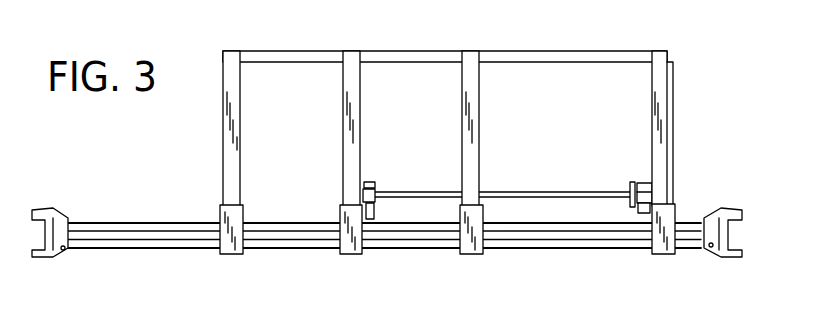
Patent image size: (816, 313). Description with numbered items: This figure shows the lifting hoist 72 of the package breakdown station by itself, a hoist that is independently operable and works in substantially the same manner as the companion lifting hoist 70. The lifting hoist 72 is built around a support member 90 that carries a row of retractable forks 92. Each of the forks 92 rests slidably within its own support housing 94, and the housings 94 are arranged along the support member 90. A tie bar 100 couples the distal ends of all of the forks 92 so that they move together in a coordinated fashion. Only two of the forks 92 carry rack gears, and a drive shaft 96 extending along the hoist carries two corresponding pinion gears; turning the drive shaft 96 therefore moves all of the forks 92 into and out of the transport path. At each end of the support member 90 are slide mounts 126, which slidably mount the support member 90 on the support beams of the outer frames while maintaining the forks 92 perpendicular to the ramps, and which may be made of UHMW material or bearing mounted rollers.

The lifting hoist 72 is at (168, 178).
The support member 90 is at (120, 243).
The retractable forks 92 is at (353, 147).
The support housing 94 is at (347, 255).
The drive shaft 96 is at (527, 191).
The tie bar 100 is at (418, 51).
The slide mounts 126 is at (50, 208).
The lifting hoist 70 is at (564, 6).